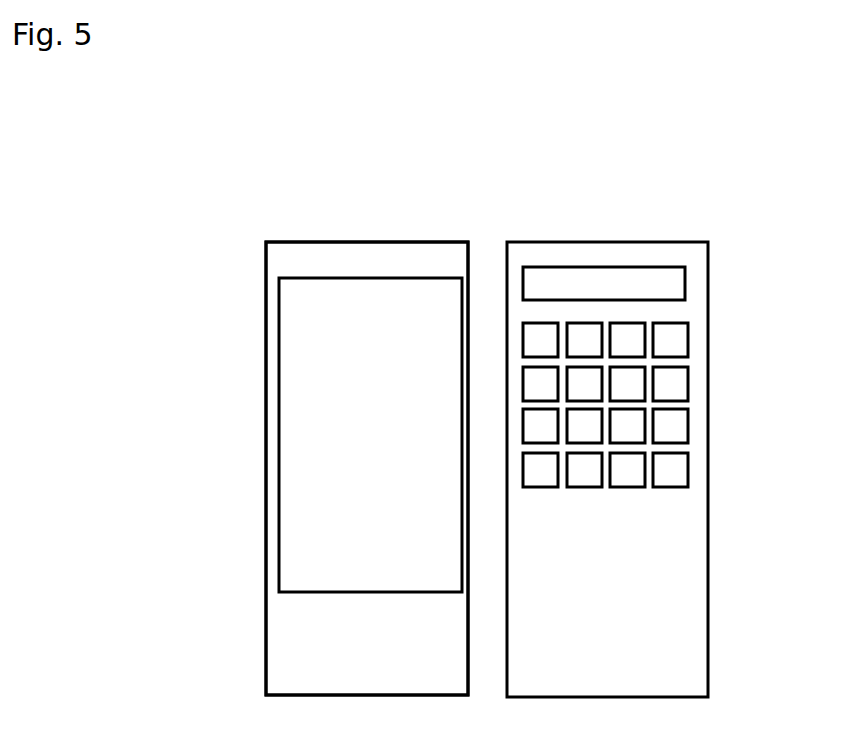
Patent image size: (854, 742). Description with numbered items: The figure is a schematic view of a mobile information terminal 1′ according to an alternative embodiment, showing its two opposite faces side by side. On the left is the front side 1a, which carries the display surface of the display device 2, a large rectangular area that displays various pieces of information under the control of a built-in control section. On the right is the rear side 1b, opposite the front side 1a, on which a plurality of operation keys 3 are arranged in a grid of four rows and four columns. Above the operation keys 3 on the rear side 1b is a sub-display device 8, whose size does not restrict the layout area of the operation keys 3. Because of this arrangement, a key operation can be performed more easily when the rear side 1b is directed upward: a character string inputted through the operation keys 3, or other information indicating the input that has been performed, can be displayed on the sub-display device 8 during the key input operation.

The mobile information terminal 1′ is at (297, 240).
The front side 1a is at (283, 656).
The rear side 1b is at (695, 666).
The display device 2 is at (287, 508).
The operation keys 3 is at (688, 332).
The sub-display device 8 is at (655, 277).